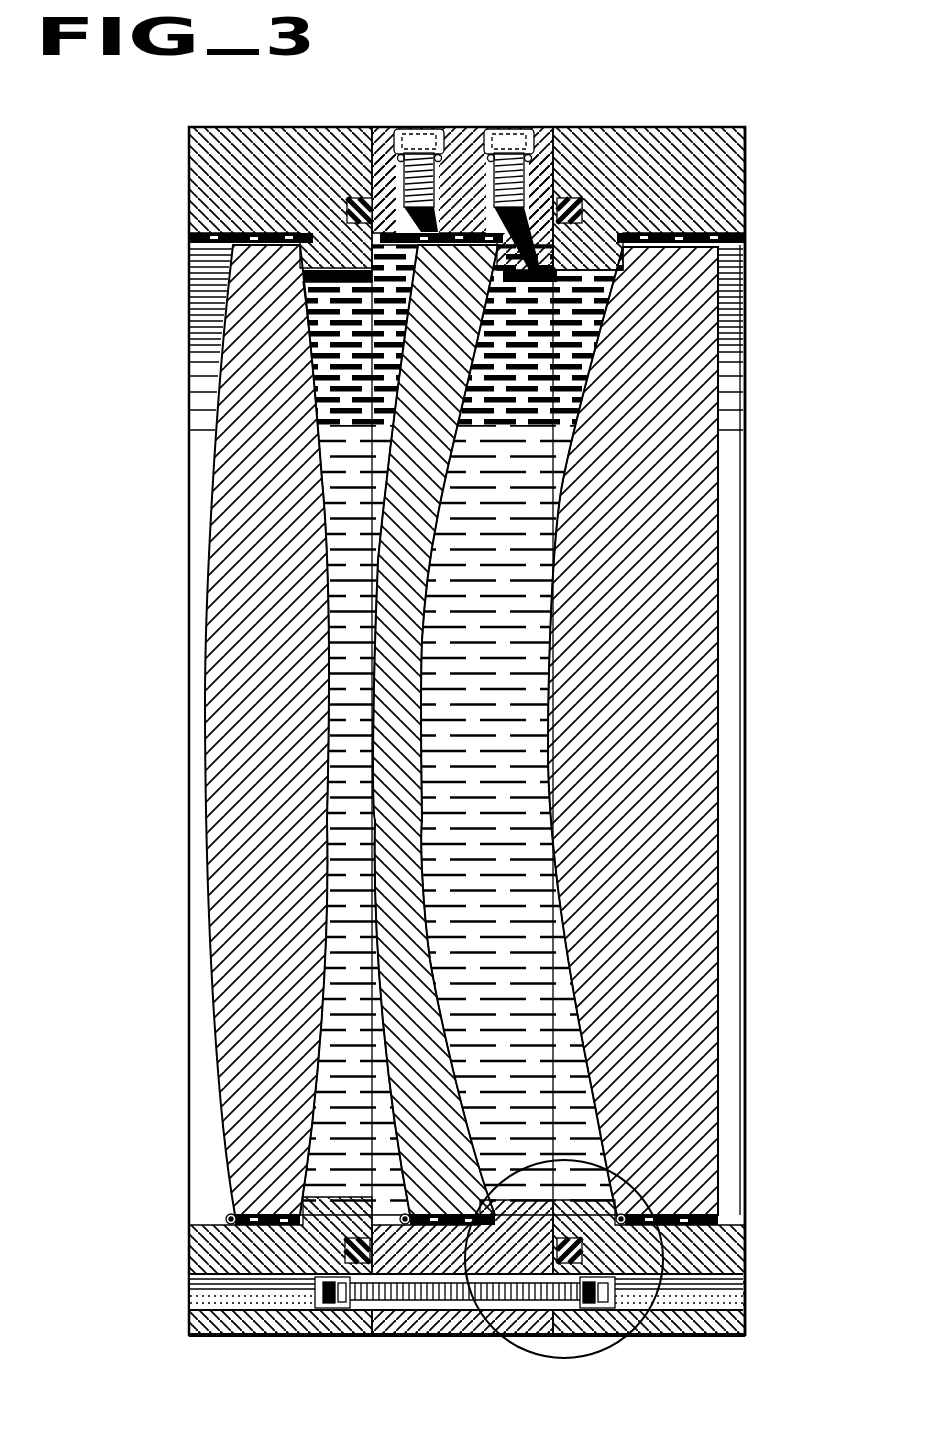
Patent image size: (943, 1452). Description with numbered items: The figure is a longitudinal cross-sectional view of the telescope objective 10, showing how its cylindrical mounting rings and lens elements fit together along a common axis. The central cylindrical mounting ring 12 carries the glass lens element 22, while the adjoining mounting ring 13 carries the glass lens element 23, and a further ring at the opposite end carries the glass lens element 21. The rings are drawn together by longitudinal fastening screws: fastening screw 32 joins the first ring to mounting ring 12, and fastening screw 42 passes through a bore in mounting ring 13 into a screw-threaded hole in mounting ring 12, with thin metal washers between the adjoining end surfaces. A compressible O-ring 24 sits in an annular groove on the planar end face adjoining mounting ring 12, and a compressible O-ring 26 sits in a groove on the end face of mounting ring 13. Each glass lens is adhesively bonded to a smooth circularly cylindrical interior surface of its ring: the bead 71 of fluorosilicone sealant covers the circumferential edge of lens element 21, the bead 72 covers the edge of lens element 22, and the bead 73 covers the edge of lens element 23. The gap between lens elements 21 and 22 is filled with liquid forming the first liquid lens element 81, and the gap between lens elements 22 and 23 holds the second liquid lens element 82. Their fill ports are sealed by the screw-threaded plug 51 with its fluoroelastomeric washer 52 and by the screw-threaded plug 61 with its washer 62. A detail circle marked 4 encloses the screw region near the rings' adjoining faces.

The telescope objective 10 is at (144, 243).
The cylindrical mounting ring 12 is at (455, 128).
The cylindrical mounting ring 13 is at (748, 180).
The glass lens element 21 is at (205, 697).
The glass lens element 22 is at (436, 936).
The glass lens element 23 is at (720, 695).
The compressible O-ring 24 is at (357, 198).
The compressible O-ring 26 is at (570, 200).
The fastening screw 32 is at (337, 1310).
The fastening screw 42 is at (615, 1300).
The screw-threaded plug 51 is at (418, 128).
The fluoroelastomeric washer 52 is at (400, 200).
The screw-threaded plug 61 is at (494, 128).
The fluoroelastomeric washer 62 is at (548, 135).
The bead of sealant material 71 is at (226, 1216).
The bead of sealant material 72 is at (402, 1216).
The bead of sealant material 73 is at (627, 1216).
The first liquid lens element 81 is at (366, 923).
The second liquid lens element 82 is at (483, 813).
The section detail circle 4 is at (483, 1322).